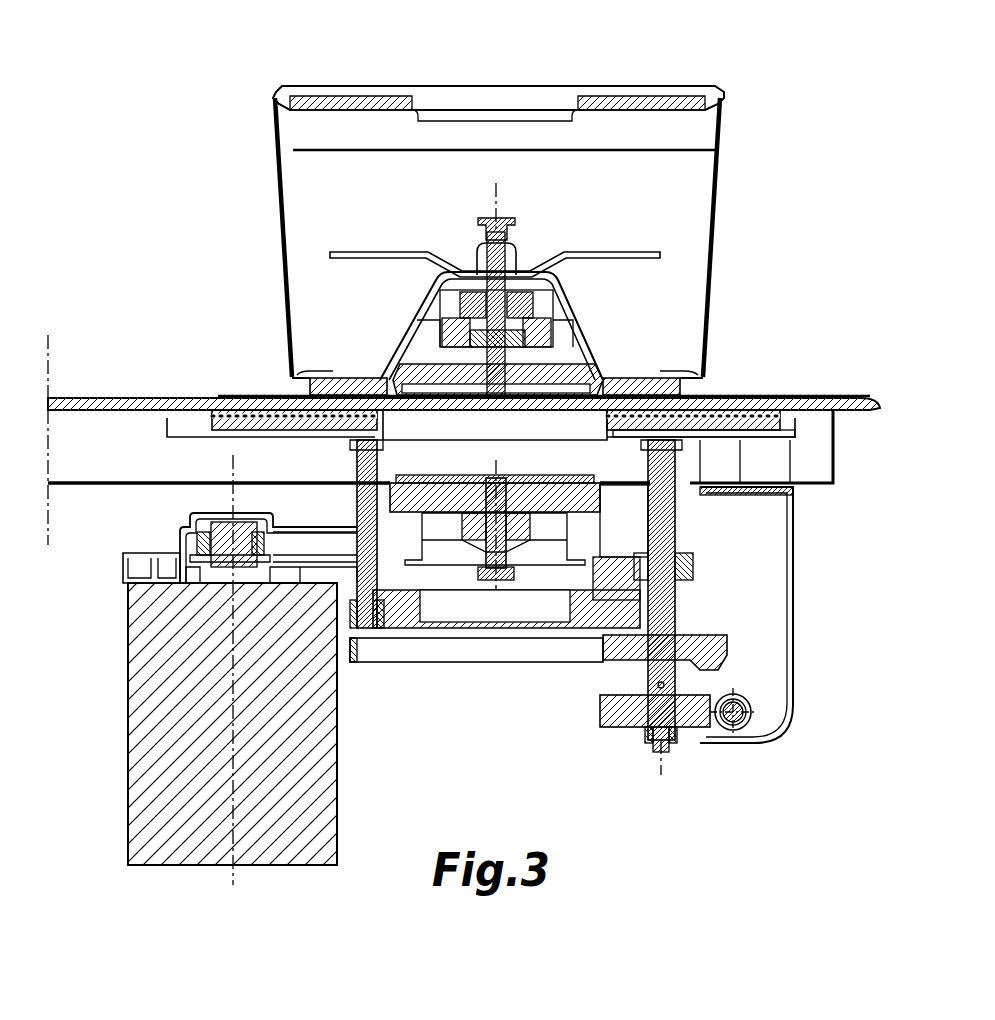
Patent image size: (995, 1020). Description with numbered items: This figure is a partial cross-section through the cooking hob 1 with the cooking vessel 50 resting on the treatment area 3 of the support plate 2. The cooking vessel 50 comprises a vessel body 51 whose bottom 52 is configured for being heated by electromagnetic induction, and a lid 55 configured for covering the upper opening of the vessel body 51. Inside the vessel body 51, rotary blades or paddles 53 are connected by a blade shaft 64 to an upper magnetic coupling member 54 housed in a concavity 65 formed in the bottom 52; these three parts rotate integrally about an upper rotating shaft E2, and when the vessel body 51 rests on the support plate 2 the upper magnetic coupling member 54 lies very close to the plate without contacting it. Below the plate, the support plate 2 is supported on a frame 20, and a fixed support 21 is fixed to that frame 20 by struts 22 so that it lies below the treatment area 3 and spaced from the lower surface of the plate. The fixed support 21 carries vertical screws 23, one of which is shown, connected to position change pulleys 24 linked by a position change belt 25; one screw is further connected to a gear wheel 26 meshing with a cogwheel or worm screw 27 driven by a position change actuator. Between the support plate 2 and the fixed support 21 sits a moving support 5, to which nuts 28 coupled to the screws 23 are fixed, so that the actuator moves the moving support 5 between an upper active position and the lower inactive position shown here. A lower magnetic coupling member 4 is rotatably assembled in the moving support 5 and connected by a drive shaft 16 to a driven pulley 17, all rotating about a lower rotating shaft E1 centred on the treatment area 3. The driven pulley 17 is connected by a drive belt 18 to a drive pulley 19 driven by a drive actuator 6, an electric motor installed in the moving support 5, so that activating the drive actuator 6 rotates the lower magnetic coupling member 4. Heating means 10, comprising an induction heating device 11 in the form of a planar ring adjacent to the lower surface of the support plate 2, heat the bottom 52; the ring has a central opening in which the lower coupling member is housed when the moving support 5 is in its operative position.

The cooking hob 1 is at (168, 338).
The support plate 2 is at (103, 398).
The treatment area 3 is at (283, 392).
The lower magnetic coupling member 4 is at (452, 475).
The moving support 5 is at (612, 556).
The drive actuator 6 is at (133, 718).
The heating means 10 is at (210, 452).
The induction heating device 11 is at (262, 430).
The drive shaft 16 is at (520, 560).
The driven pulley 17 is at (458, 560).
The drive belt 18 is at (325, 542).
The drive pulley 19 is at (215, 522).
The frame 20 is at (836, 462).
The fixed support 21 is at (588, 620).
The struts 22 is at (385, 590).
The vertical screws 23 is at (682, 532).
The position change pulleys 24 is at (715, 652).
The position change belt 25 is at (383, 665).
The gear wheel 26 is at (630, 718).
The cogwheel or worm screw 27 is at (752, 730).
The nuts 28 is at (690, 566).
The cooking vessel 50 is at (600, 50).
The vessel body 51 is at (276, 212).
The bottom 52 is at (312, 380).
The rotary blades or paddles 53 is at (622, 252).
The upper magnetic coupling member 54 is at (582, 362).
The lid 55 is at (358, 100).
The blade shaft 64 is at (540, 305).
The concavity 65 is at (397, 347).
The lower rotating shaft E1 is at (498, 468).
The upper rotating shaft E2 is at (492, 190).